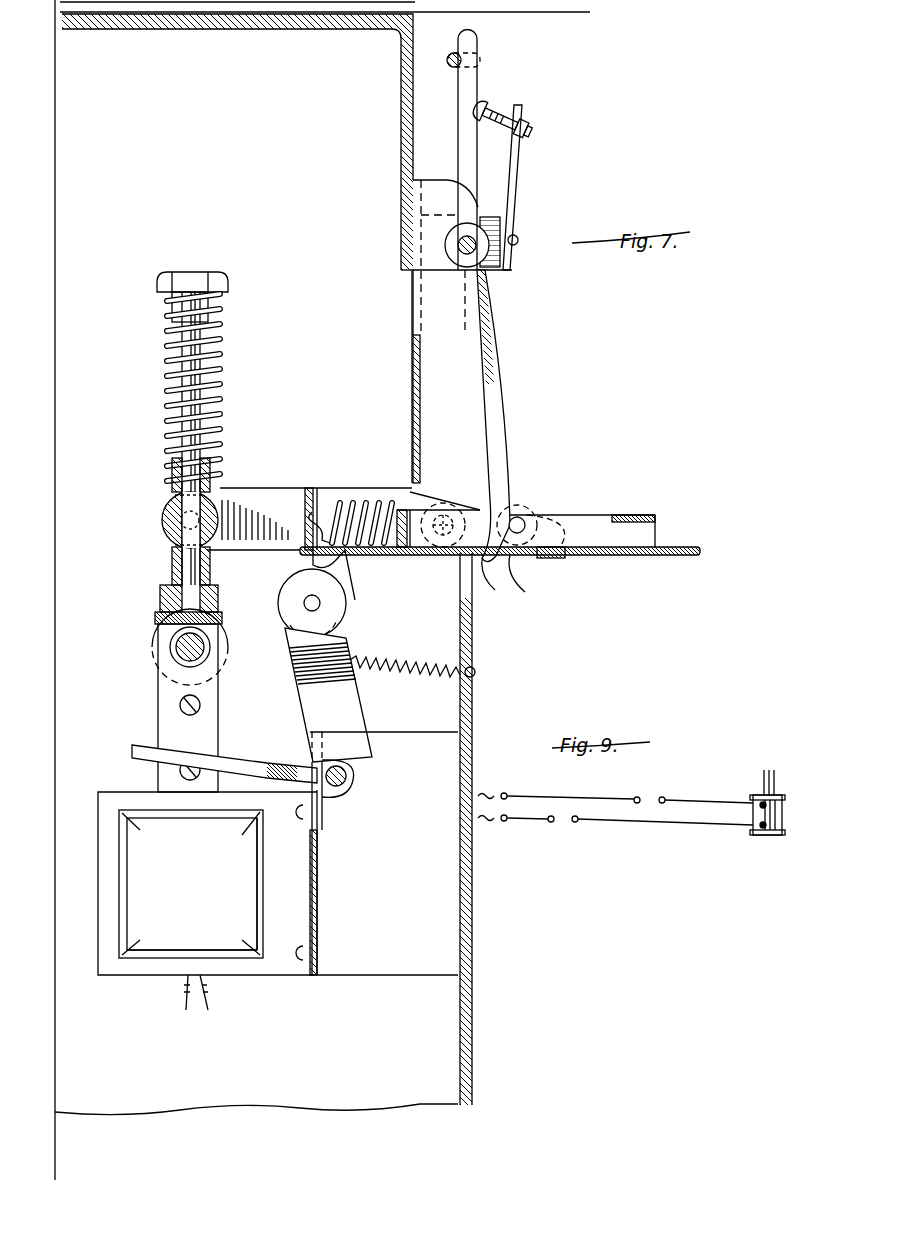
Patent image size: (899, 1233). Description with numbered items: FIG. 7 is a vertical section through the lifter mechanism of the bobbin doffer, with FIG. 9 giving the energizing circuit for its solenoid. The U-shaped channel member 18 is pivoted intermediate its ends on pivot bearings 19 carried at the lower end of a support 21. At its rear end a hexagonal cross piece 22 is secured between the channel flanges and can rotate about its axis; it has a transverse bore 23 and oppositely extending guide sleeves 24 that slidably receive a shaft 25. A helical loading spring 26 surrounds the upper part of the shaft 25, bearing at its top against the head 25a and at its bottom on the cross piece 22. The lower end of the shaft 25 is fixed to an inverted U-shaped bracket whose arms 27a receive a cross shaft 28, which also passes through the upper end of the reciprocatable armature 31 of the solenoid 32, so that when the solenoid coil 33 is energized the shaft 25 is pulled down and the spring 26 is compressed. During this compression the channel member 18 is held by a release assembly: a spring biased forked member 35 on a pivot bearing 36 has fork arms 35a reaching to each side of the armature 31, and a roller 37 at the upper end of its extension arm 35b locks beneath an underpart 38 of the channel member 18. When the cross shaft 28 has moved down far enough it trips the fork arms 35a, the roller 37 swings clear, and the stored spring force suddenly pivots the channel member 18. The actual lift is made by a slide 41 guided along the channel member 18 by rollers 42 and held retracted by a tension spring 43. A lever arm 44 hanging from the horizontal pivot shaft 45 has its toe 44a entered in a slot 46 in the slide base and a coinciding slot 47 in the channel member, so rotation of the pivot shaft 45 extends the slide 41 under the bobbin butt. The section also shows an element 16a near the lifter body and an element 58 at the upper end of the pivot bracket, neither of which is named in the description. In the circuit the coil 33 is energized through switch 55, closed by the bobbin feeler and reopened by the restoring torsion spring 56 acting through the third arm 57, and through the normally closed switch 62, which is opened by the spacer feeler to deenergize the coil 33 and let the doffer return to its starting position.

In FIG. 7, the lever arm body 16a is at (280, 480).
In FIG. 7, the U-shaped channel member 18 is at (285, 553).
In FIG. 7, the pivot bearings 19 is at (433, 562).
In FIG. 7, the support 21 is at (411, 392).
In FIG. 7, the cross piece 22 is at (162, 512).
In FIG. 7, the transverse bore 23 is at (172, 530).
In FIG. 7, the guide sleeves 24 is at (175, 468).
In FIG. 7, the shaft 25 is at (190, 410).
In FIG. 7, the head 25a is at (158, 283).
In FIG. 7, the helical loading spring 26 is at (165, 355).
In FIG. 7, the arms of bracket 27a is at (163, 626).
In FIG. 7, the cross shaft 28 is at (178, 652).
In FIG. 7, the reciprocatable armature 31 is at (172, 718).
In FIG. 7, the solenoid 32 is at (95, 883).
In FIG. 7, the solenoid coil 33 is at (278, 901).
In FIG. 9, the solenoid coil 33 is at (783, 818).
In FIG. 7, the spring biased forked member 35 is at (282, 758).
In FIG. 7, the arms of the fork 35a is at (132, 752).
In FIG. 7, the extension arm 35b is at (340, 694).
In FIG. 7, the pivot bearing 36 is at (348, 778).
In FIG. 7, the roller 37 is at (285, 604).
In FIG. 9, the roller 37 is at (800, 781).
In FIG. 7, the underpart 38 is at (343, 585).
In FIG. 7, the slide 41 is at (652, 548).
In FIG. 7, the rollers 42 is at (515, 507).
In FIG. 7, the tension spring 43 is at (370, 480).
In FIG. 7, the lever arm 44 is at (500, 440).
In FIG. 7, the toe 44a is at (503, 588).
In FIG. 7, the pivot shaft 45 is at (472, 262).
In FIG. 7, the slot 46 is at (458, 570).
In FIG. 7, the coinciding slot 47 is at (550, 560).
In FIG. 9, the switch 55 is at (653, 785).
In FIG. 7, the restoring torsion spring 56 is at (470, 80).
In FIG. 7, the third arm 57 is at (463, 52).
In FIG. 7, the bolt 58 is at (502, 119).
In FIG. 9, the switch 62 is at (562, 822).